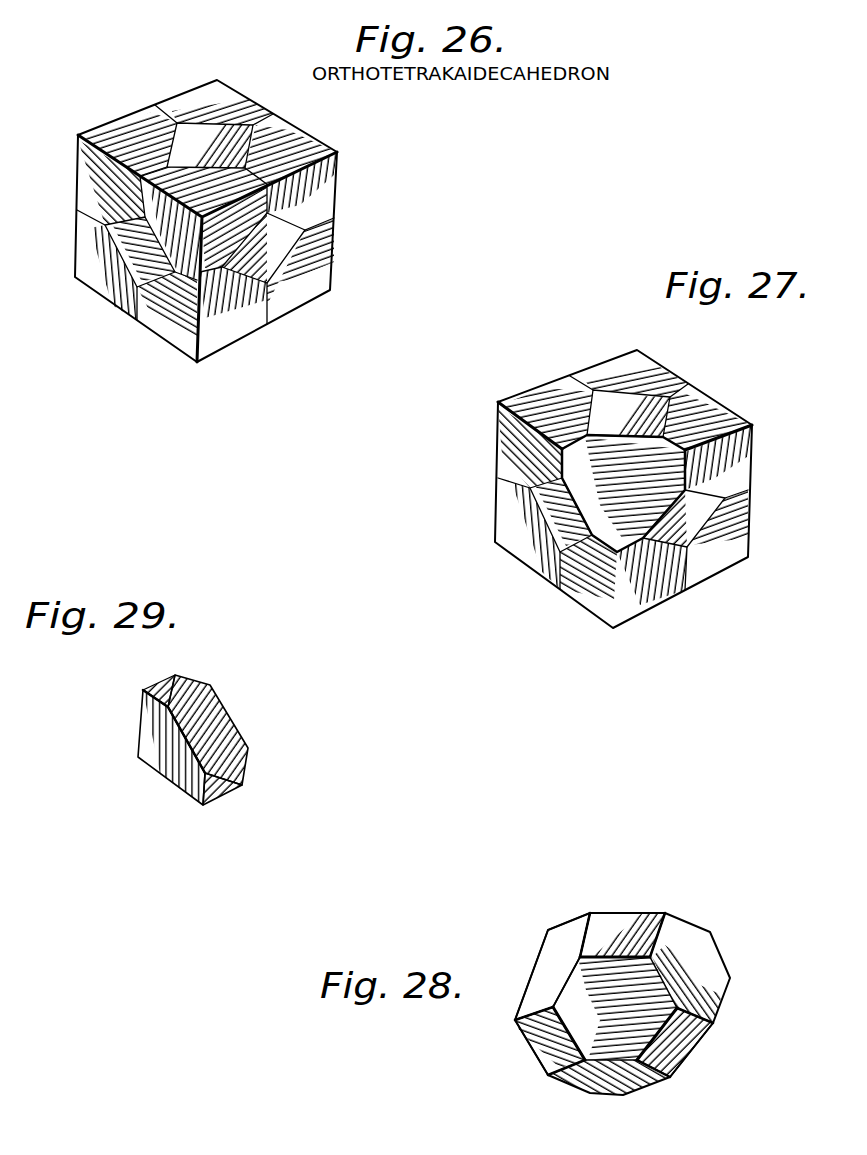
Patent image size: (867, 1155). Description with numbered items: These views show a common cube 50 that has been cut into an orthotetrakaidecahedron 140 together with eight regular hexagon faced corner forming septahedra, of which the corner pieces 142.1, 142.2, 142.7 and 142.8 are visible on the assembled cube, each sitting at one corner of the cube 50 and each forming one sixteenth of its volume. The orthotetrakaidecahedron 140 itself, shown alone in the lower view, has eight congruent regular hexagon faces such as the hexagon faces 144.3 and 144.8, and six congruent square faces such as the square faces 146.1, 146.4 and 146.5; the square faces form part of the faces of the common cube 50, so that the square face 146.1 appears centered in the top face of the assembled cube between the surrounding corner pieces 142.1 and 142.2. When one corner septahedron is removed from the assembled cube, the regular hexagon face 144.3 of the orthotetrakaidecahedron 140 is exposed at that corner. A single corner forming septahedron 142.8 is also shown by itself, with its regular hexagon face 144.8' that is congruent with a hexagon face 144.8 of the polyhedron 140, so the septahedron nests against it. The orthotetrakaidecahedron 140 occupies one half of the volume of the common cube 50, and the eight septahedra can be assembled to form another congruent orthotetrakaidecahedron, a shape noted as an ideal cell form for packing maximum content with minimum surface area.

In FIG. 26, the common cube 50 is at (352, 206).
In FIG. 26, the orthotetrakaidecahedron 140 is at (283, 248).
In FIG. 28, the orthotetrakaidecahedron 140 is at (712, 908).
In FIG. 26, the corner forming septahedron 142.1 is at (237, 55).
In FIG. 26, the corner forming septahedron 142.2 is at (295, 138).
In FIG. 26, the corner forming septahedron 142.7 is at (242, 328).
In FIG. 26, the corner forming septahedron 142.8 is at (100, 278).
In FIG. 27, the corner forming septahedron 142.8 is at (512, 543).
In FIG. 29, the corner forming septahedron 142.8 is at (165, 763).
In FIG. 27, the regular hexagon face 144.3 is at (598, 511).
In FIG. 28, the regular hexagon face 144.8 is at (547, 944).
In FIG. 29, the regular hexagon face of septahedron 144.8' is at (262, 730).
In FIG. 26, the square face 146.1 is at (195, 130).
In FIG. 27, the square face 146.1 is at (613, 397).
In FIG. 28, the square face 146.1 is at (615, 922).
In FIG. 28, the square face 146.4 is at (688, 1045).
In FIG. 28, the square face 146.5 is at (543, 1040).